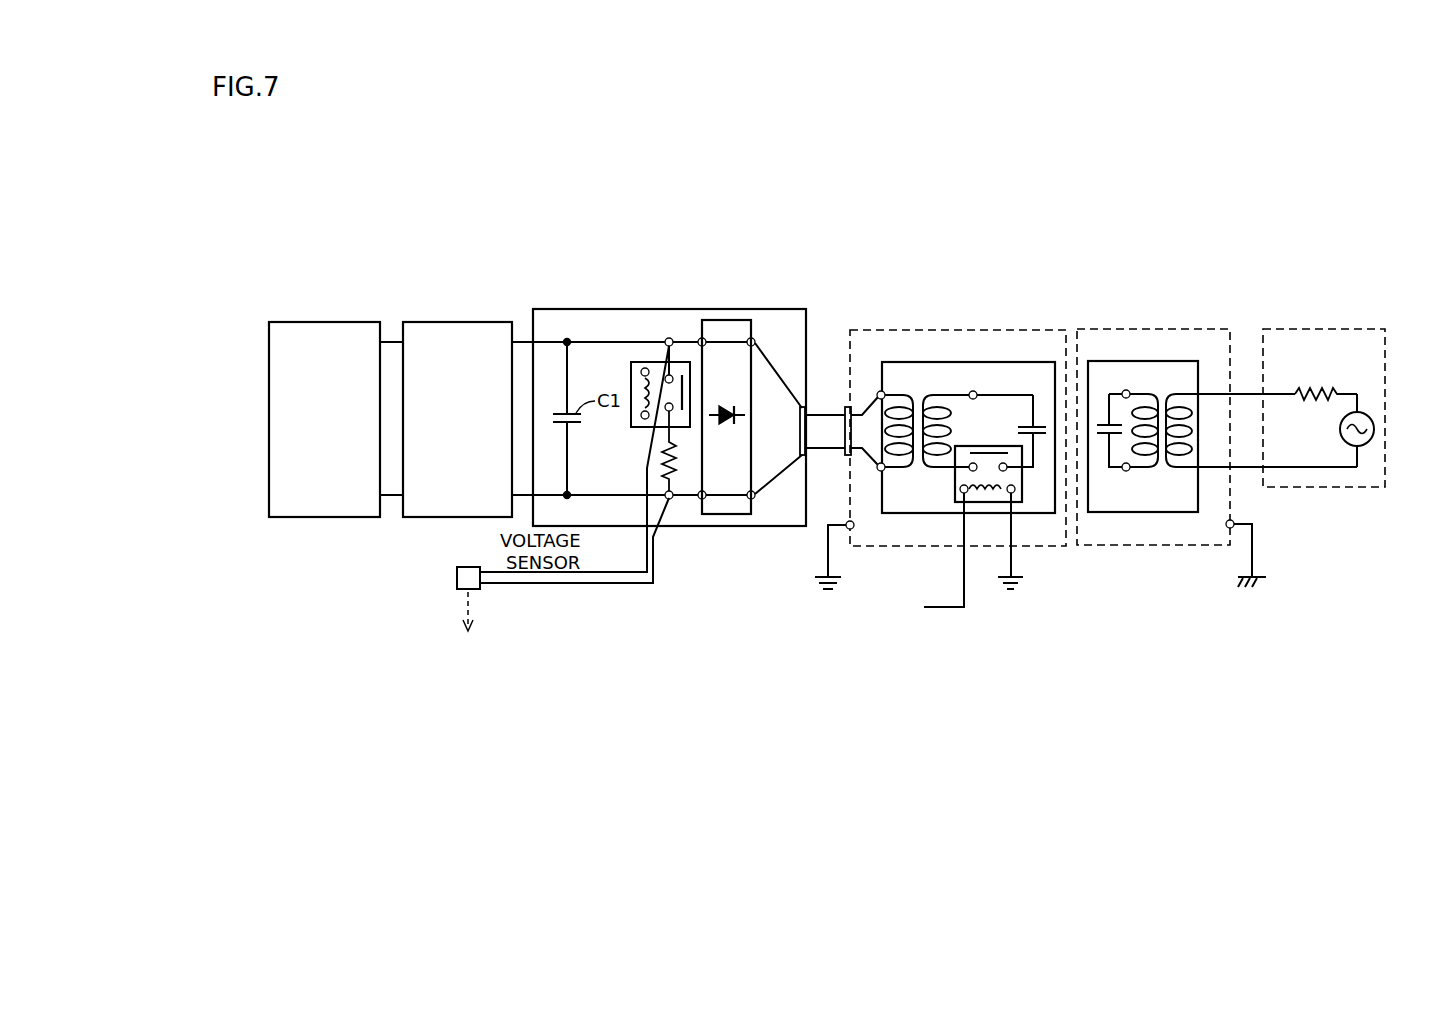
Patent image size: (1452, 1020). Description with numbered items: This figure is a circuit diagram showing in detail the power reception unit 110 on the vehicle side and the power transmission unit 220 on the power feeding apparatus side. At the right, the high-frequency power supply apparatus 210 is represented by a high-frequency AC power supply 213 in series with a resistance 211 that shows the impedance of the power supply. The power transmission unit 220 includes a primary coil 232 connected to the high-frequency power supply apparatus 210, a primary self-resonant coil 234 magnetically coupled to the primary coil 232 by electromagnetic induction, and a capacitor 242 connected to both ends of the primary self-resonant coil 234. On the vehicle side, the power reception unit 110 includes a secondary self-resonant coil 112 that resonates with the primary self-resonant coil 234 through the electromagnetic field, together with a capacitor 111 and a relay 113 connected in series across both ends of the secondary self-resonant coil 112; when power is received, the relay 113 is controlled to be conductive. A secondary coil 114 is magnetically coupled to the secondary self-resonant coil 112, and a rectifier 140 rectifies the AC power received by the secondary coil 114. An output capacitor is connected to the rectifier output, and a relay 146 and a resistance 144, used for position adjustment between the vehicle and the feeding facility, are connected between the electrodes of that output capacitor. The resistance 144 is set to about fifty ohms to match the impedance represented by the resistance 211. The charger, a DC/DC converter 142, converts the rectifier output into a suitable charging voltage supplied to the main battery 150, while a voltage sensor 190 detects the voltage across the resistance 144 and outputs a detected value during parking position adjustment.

The main battery 150 is at (325, 321).
The DC/DC converter 142 is at (458, 321).
The relay 146 is at (647, 362).
The rectifier 140 is at (727, 320).
The resistance 144 is at (672, 478).
The voltage sensor 190 is at (457, 579).
The power reception unit 110 is at (1028, 330).
The secondary coil 114 is at (897, 393).
The secondary self-resonant coil 112 is at (946, 393).
The capacitor 111 is at (1040, 437).
The relay 113 is at (955, 492).
The power transmission unit 220 is at (1192, 329).
The capacitor 242 is at (1102, 422).
The primary self-resonant coil 234 is at (1140, 469).
The primary coil 232 is at (1180, 469).
The high-frequency power supply apparatus 210 is at (1330, 329).
The resistance 211 is at (1314, 390).
The high-frequency AC power supply 213 is at (1376, 430).